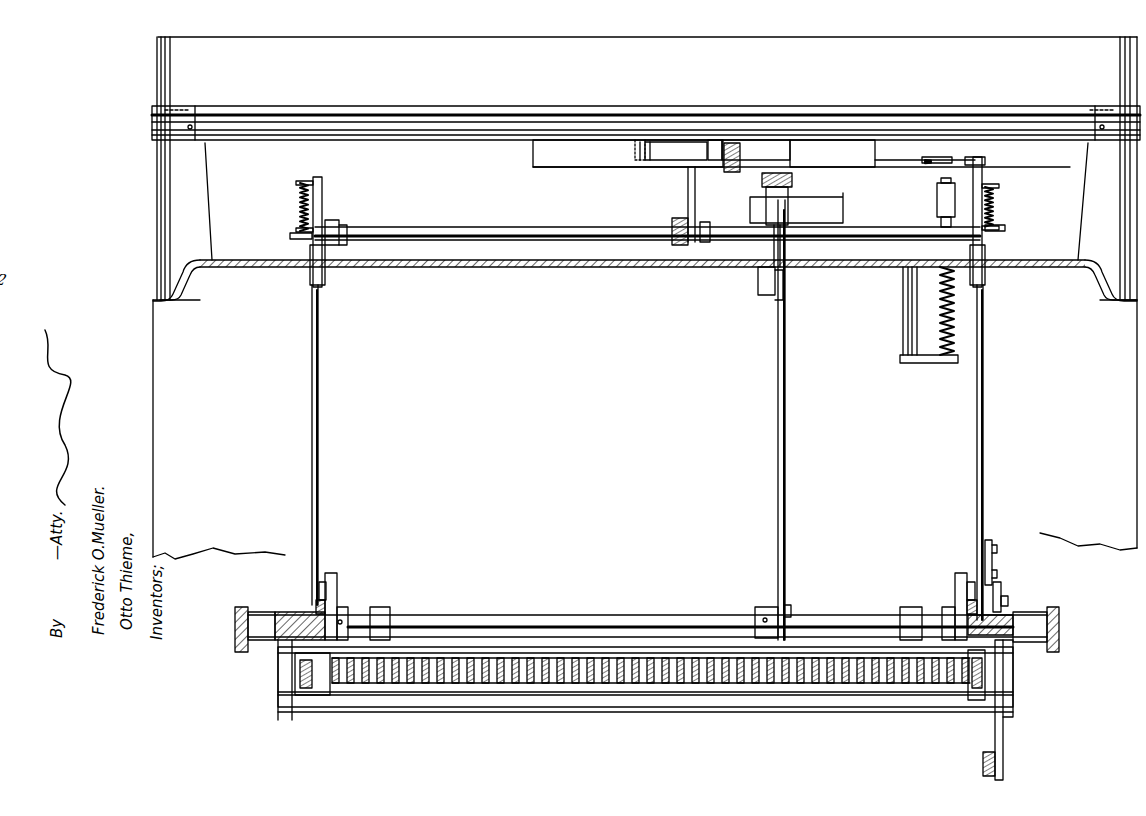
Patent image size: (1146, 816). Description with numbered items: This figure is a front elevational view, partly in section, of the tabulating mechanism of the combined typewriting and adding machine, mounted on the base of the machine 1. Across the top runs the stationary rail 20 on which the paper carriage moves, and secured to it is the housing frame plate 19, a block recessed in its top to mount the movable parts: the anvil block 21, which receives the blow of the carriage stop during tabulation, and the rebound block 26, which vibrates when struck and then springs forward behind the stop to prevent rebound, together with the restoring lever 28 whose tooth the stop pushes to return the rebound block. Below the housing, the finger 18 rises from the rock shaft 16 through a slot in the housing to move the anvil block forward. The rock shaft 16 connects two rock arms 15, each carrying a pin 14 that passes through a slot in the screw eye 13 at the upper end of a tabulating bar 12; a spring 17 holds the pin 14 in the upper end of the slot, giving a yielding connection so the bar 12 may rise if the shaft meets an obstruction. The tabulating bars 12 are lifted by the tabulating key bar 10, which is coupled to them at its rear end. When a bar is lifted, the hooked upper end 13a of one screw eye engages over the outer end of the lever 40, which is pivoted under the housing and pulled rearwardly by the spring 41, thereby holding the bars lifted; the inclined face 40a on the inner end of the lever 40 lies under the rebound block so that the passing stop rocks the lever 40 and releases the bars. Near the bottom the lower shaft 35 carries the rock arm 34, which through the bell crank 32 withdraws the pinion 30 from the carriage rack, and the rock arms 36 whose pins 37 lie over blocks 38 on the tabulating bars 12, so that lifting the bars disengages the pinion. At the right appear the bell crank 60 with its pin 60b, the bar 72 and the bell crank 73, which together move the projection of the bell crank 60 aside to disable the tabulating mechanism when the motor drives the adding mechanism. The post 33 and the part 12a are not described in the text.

The base of the machine 1 is at (260, 283).
The tabulating key bar 10 is at (330, 695).
The tabulating bar 12 is at (318, 420).
The post extension 12a is at (992, 575).
The screw eye 13 is at (322, 195).
The hooked upper end 13a is at (985, 162).
The pin 14 is at (295, 232).
The rock arm 15 is at (335, 225).
The rock shaft 16 is at (605, 233).
The spring 17 is at (300, 202).
The finger 18 is at (688, 210).
The housing frame plate 19 is at (598, 168).
The stationary rail 20 is at (470, 112).
The anvil block 21 is at (673, 151).
The rebound block 26 is at (749, 150).
The restoring lever 28 is at (652, 140).
The pinion 30 is at (762, 181).
The bell crank 32 is at (785, 272).
The vertical rod 33 is at (778, 380).
The rock arm 34 is at (760, 607).
The shaft 35 is at (575, 612).
The rock arm 36 is at (348, 592).
The pin 37 is at (324, 582).
The block 38 is at (318, 600).
The lever 40 is at (874, 170).
The inclined face 40a is at (748, 170).
The spring 41 is at (926, 160).
The bell crank 60 is at (1001, 594).
The pin 60b is at (1008, 604).
The bar 72 is at (983, 760).
The bell crank 73 is at (1003, 744).